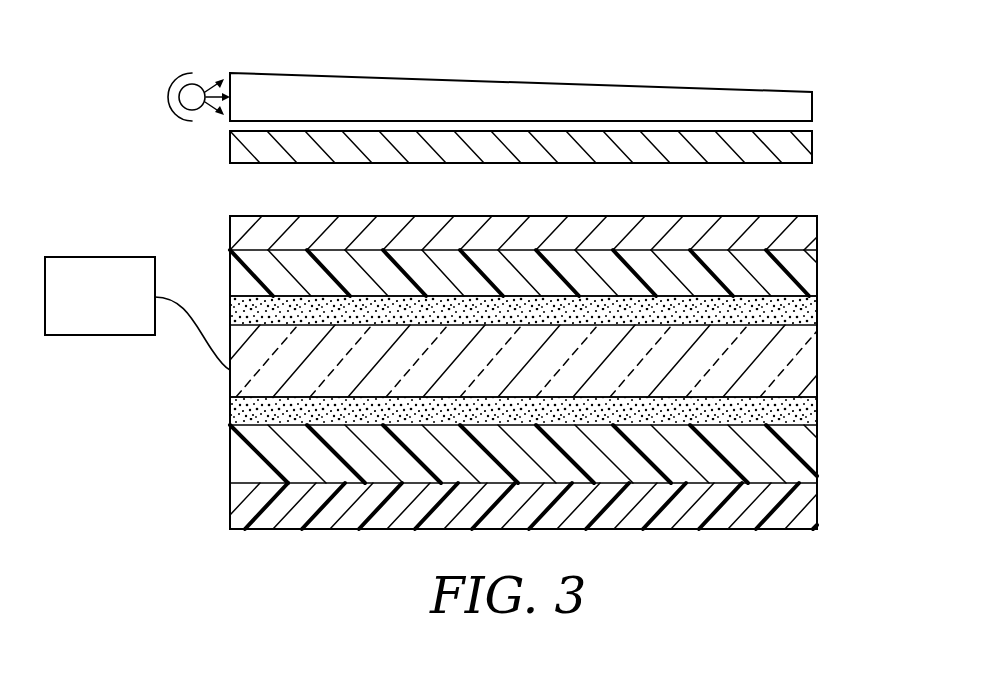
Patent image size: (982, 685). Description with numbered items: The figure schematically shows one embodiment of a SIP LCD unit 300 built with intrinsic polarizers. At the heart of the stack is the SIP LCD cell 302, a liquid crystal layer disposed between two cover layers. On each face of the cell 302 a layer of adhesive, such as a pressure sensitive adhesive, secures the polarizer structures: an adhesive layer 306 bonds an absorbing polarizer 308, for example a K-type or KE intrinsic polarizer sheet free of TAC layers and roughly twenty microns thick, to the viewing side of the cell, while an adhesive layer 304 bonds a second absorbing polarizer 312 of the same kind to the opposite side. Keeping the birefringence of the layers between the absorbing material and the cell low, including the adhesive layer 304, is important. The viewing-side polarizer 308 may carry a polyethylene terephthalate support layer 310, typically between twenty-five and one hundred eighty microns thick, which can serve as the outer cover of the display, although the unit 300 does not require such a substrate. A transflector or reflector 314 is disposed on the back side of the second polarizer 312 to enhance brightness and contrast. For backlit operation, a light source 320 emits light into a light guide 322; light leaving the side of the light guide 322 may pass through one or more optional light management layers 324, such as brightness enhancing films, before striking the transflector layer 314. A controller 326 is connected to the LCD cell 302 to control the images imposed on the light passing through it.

The LCD unit 300 is at (168, 441).
The SIP LCD cell 302 is at (802, 368).
The adhesive layer 304 is at (805, 310).
The adhesive layer 306 is at (802, 413).
The absorbing polarizer 308 is at (805, 452).
The PET support layer 310 is at (805, 510).
The second absorbing polarizer 312 is at (805, 276).
The transflector or reflector 314 is at (805, 237).
The light source 320 is at (187, 78).
The light guide 322 is at (287, 73).
The light management layer 324 is at (235, 155).
The controller 326 is at (102, 257).